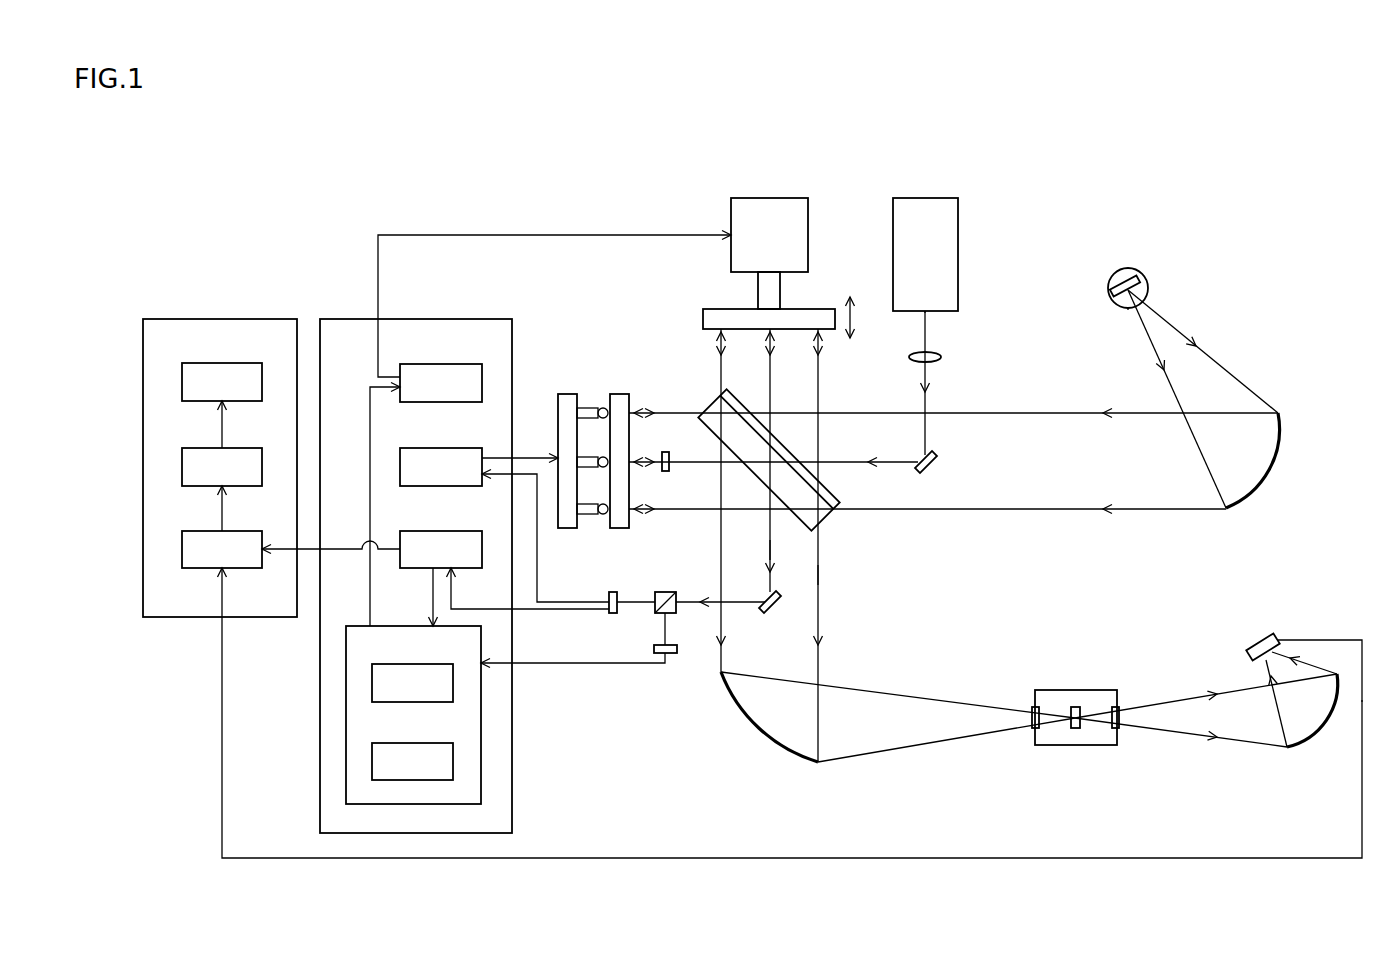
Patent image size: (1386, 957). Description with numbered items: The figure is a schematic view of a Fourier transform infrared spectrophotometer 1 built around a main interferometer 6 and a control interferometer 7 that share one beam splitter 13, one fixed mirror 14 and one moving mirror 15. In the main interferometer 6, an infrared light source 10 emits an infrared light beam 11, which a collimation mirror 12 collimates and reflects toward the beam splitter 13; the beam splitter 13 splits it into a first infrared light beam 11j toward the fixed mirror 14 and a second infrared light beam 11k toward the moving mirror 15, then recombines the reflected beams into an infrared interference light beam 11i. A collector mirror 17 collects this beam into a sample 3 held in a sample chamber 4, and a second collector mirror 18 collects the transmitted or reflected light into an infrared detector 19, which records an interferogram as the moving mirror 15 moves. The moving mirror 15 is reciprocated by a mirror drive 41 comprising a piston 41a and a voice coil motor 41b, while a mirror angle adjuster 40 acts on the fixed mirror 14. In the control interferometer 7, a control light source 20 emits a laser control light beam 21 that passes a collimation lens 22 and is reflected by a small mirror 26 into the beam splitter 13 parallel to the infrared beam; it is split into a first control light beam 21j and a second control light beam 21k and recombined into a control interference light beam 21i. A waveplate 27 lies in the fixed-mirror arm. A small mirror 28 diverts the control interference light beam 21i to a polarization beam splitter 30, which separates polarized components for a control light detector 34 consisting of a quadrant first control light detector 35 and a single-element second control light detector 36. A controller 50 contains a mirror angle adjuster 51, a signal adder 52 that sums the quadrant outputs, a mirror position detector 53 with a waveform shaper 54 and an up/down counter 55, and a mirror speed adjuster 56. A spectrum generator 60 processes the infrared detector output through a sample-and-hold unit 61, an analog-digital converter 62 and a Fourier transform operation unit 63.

The Fourier transform infrared spectrophotometer 1 is at (1299, 160).
The sample 3 is at (1075, 705).
The sample chamber 4 is at (1106, 690).
The main interferometer 6 is at (1171, 268).
The control interferometer 7 is at (974, 192).
The infrared light source 10 is at (1122, 268).
The infrared light beam 11 is at (1236, 380).
The infrared interference light beam 11i is at (818, 575).
The first infrared light beam 11j is at (670, 411).
The second infrared light beam 11k is at (818, 371).
The collimation mirror 12 is at (1260, 478).
The beam splitter 13 is at (830, 493).
The fixed mirror 14 is at (620, 394).
The moving mirror 15 is at (703, 320).
The collector mirror 17 is at (768, 727).
The collector mirror 18 is at (1302, 738).
The infrared detector 19 is at (1260, 634).
The control light source 20 is at (925, 198).
The control light beam 21 is at (928, 328).
The control interference light beam 21i is at (770, 548).
The first control light beam 21j is at (700, 468).
The second control light beam 21k is at (770, 394).
The collimation lens 22 is at (942, 357).
The mirror 26 is at (935, 470).
The waveplate 27 is at (666, 474).
The mirror 28 is at (782, 608).
The polarization beam splitter 30 is at (670, 590).
The control light detector 34 is at (629, 634).
The first control light detector 35 is at (612, 590).
The second control light detector 36 is at (677, 655).
The mirror angle adjuster 40 is at (567, 394).
The mirror drive 41 is at (801, 215).
The piston 41a is at (780, 298).
The voice coil motor 41b is at (773, 198).
The controller 50 is at (497, 319).
The mirror angle adjuster 51 is at (450, 448).
The signal adder 52 is at (450, 531).
The mirror position detector 53 is at (398, 626).
The waveform shaper 54 is at (422, 664).
The up/down counter 55 is at (422, 743).
The mirror speed adjuster 56 is at (450, 364).
The spectrum generator 60 is at (283, 319).
The sample-and-hold unit 61 is at (230, 531).
The analog-digital converter 62 is at (230, 448).
The Fourier transform operation unit 63 is at (230, 364).